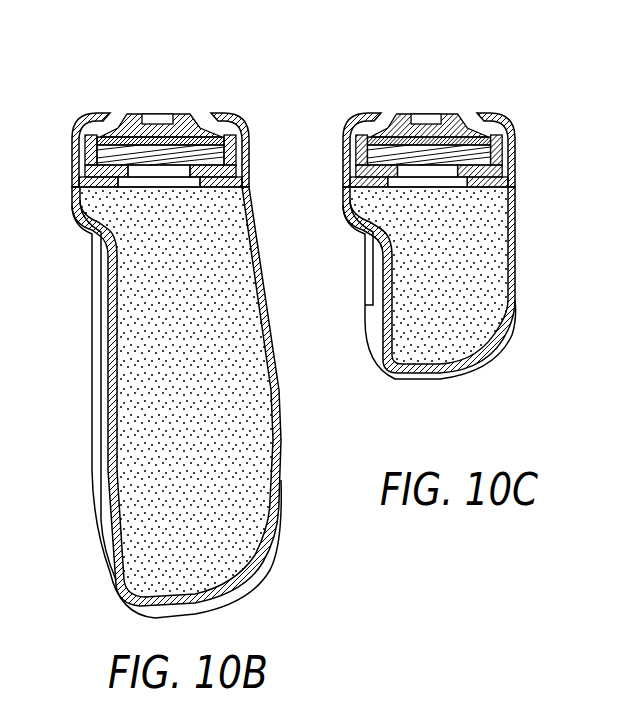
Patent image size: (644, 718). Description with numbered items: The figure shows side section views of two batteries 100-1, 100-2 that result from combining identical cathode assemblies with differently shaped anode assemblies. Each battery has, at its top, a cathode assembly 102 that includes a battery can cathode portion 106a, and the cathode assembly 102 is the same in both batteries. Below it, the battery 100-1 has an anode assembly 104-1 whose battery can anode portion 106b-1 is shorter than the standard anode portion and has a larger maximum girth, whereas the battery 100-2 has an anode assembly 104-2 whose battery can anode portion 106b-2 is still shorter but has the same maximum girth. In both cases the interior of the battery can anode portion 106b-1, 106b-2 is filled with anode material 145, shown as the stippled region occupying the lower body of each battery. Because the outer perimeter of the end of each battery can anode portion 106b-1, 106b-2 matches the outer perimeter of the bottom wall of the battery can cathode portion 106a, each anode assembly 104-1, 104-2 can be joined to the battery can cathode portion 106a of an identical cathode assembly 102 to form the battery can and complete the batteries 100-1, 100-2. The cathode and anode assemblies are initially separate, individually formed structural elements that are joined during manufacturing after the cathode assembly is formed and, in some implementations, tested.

In FIG. 10B, the battery 100-1 is at (196, 342).
In FIG. 10C, the battery 100-2 is at (456, 245).
In FIG. 10B, the cathode assembly 102 is at (180, 110).
In FIG. 10C, the cathode assembly 102 is at (456, 108).
In FIG. 10B, the anode assembly 104-1 is at (266, 565).
In FIG. 10C, the anode assembly 104-2 is at (502, 357).
In FIG. 10B, the battery can cathode portion 106a is at (72, 140).
In FIG. 10C, the battery can cathode portion 106a is at (514, 133).
In FIG. 10B, the battery can anode portion 106b-1 is at (92, 325).
In FIG. 10C, the battery can anode portion 106b-2 is at (517, 253).
In FIG. 10B, the anode material 145 is at (205, 355).
In FIG. 10C, the anode material 145 is at (470, 290).